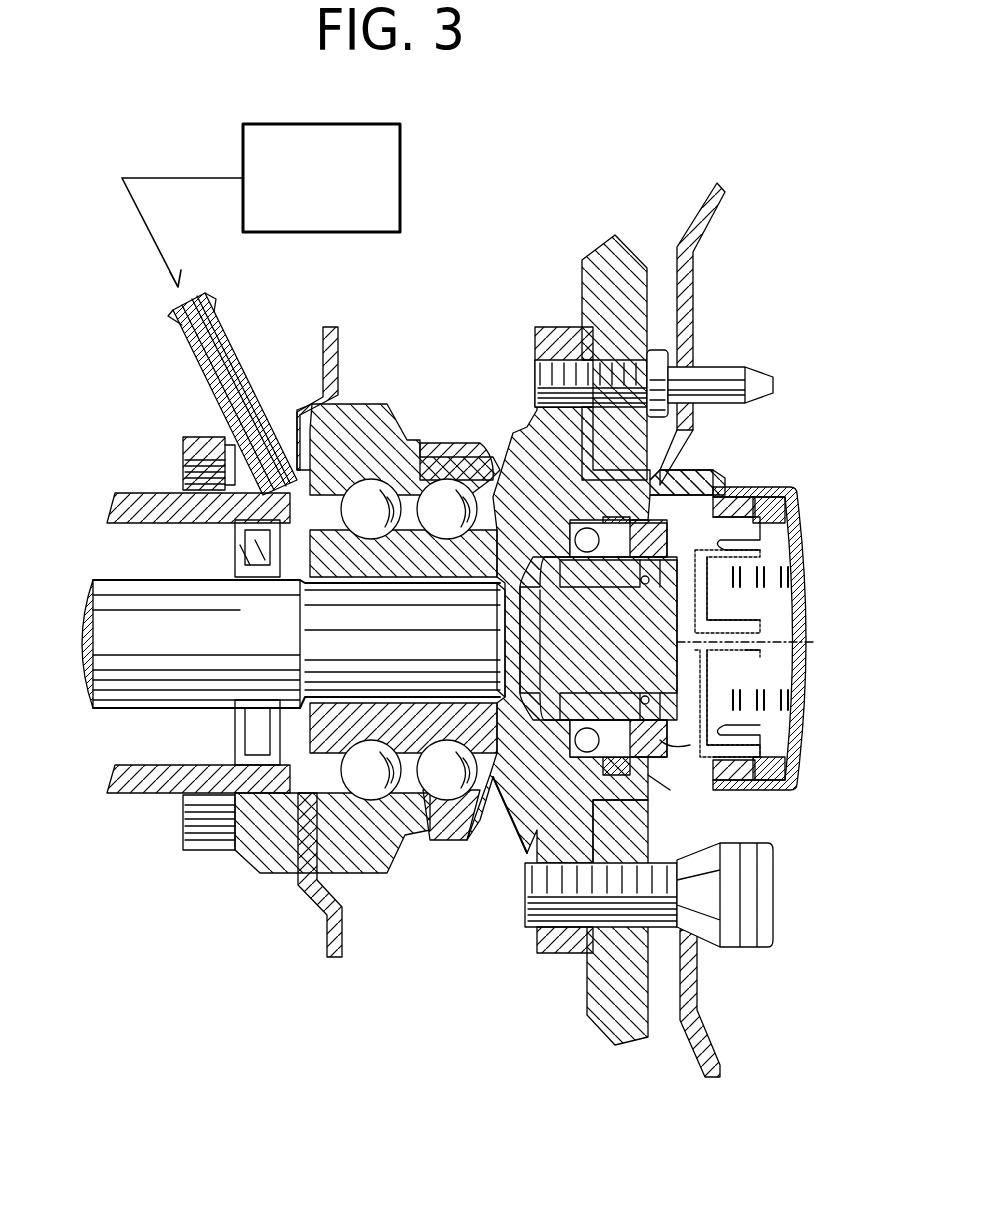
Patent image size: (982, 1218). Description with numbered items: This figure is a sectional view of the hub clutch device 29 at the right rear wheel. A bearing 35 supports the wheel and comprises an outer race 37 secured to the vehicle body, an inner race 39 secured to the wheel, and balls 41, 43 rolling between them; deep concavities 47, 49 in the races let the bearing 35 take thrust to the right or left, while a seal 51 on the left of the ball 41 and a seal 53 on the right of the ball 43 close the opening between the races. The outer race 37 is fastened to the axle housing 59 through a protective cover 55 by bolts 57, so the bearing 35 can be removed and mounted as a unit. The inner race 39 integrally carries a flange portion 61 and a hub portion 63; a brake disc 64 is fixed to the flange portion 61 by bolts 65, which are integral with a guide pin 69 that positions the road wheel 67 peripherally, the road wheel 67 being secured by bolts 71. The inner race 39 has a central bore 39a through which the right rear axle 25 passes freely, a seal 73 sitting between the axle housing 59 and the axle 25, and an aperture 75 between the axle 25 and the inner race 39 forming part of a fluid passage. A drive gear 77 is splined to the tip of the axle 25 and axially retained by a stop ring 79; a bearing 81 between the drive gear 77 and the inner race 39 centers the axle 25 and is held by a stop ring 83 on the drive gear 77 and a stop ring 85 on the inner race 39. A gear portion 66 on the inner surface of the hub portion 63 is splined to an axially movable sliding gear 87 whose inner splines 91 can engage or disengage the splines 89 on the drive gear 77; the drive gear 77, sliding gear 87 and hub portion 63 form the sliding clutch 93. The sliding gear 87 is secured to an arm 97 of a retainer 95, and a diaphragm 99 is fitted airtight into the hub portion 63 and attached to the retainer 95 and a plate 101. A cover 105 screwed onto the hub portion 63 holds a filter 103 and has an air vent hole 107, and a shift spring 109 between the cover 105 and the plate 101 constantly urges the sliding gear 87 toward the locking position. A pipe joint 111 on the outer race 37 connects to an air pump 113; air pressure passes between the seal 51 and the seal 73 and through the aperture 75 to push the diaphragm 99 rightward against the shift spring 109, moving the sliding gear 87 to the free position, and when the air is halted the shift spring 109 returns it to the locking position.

The right rear axle 25 is at (105, 600).
The wheel speed sensor assembly 29 is at (765, 205).
The bearing 35 is at (450, 357).
The outer race 37 is at (360, 403).
The inner race 39 is at (478, 577).
The bore 39a is at (243, 705).
The ball 41 is at (368, 540).
The ball 43 is at (437, 540).
The deep concavity 47 is at (365, 740).
The deep concavity 49 is at (440, 740).
The seal 51 is at (398, 506).
The seal 53 is at (455, 840).
The protective cover 55 is at (342, 918).
The bolt 57 is at (198, 437).
The axle housing 59 is at (112, 503).
The flange portion 61 is at (550, 327).
The hub portion 63 is at (700, 480).
The brake disc 64 is at (600, 255).
The bolt 65 is at (664, 335).
The gear portion 66 is at (675, 780).
The road wheel 67 is at (695, 215).
The guide pin 69 is at (758, 375).
The bolt 71 is at (775, 900).
The seal 73 is at (233, 548).
The aperture 75 is at (485, 735).
The drive gear 77 is at (598, 638).
The stop ring 79 is at (652, 632).
The bearing 81 is at (599, 595).
The stop ring 83 is at (593, 681).
The stop ring 85 is at (623, 640).
The sliding gear 87 is at (740, 800).
The splines 89 is at (677, 718).
The splines 91 is at (700, 730).
The sliding clutch 93 is at (522, 795).
The retainer 95 is at (690, 580).
The arm 97 is at (640, 520).
The diaphragm 99 is at (775, 545).
The plate 101 is at (712, 602).
The filter 103 is at (792, 505).
The cover 105 is at (808, 630).
The air vent hole 107 is at (770, 497).
The shift spring 109 is at (770, 580).
The pipe joint 111 is at (182, 326).
The air pump 113 is at (400, 198).